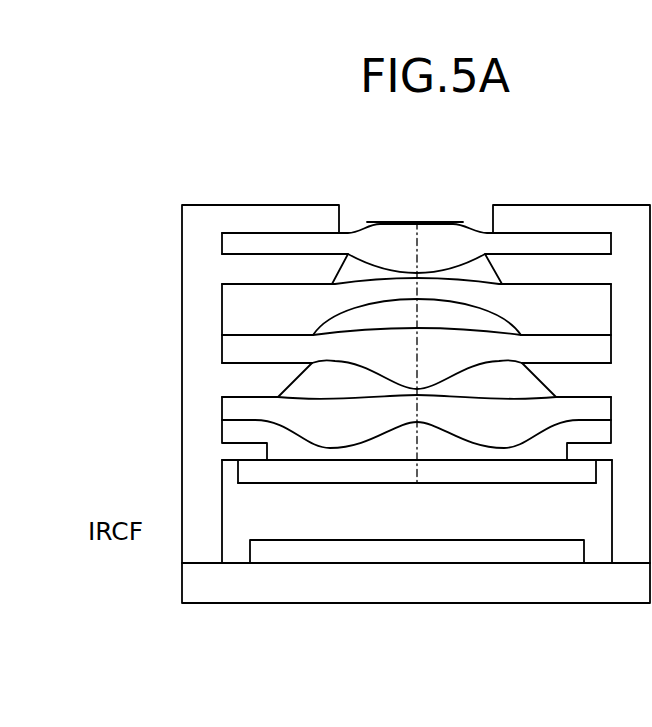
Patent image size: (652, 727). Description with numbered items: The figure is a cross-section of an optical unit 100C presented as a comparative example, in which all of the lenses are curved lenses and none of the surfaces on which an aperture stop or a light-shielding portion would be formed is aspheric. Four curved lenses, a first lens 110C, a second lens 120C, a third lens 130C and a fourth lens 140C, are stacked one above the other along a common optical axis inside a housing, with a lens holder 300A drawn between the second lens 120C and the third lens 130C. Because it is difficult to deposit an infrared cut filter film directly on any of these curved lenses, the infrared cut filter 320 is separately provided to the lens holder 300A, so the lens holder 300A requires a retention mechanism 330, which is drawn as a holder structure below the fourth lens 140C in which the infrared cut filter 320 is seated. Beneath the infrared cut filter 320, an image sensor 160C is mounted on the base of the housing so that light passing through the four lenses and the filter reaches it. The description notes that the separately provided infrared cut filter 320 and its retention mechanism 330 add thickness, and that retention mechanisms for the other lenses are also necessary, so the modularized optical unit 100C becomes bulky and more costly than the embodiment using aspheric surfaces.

The optical unit 100C is at (447, 150).
The first lens 110C is at (228, 240).
The second lens 120C is at (230, 306).
The lens holder 300A is at (192, 348).
The third lens 130C is at (220, 348).
The fourth lens 140C is at (220, 410).
The retention mechanism 330 is at (227, 453).
The IRCF 320 is at (275, 485).
The image sensor 160C is at (463, 553).